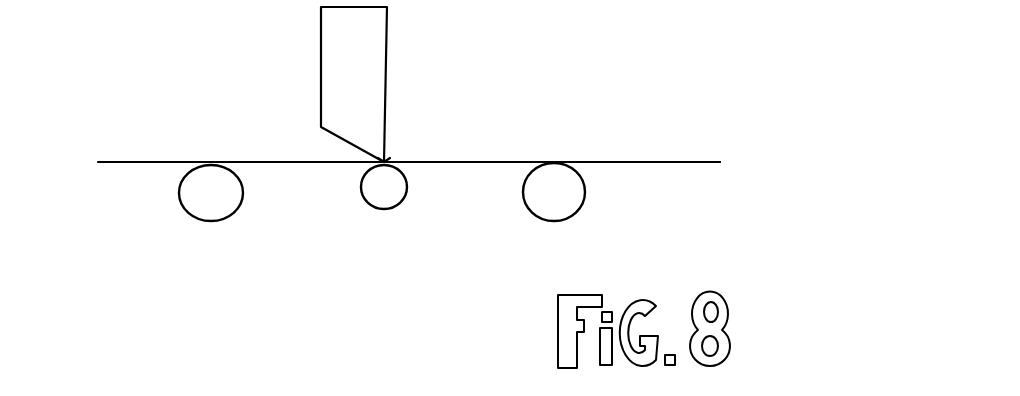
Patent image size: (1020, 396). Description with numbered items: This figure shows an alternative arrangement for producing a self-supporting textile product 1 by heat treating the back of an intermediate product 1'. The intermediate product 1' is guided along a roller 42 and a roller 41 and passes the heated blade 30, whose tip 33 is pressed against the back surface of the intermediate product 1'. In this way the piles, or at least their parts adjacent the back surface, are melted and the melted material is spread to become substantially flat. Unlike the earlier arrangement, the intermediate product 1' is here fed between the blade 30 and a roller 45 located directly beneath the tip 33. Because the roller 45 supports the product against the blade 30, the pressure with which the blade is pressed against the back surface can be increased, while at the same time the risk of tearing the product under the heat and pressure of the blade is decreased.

The self-supporting textile product 1 is at (409, 116).
The intermediate product 1' is at (595, 131).
The blade 30 is at (390, 47).
The tip 33 is at (388, 160).
The roller 41 is at (585, 218).
The particle 42 is at (190, 218).
The roller 45 is at (390, 207).